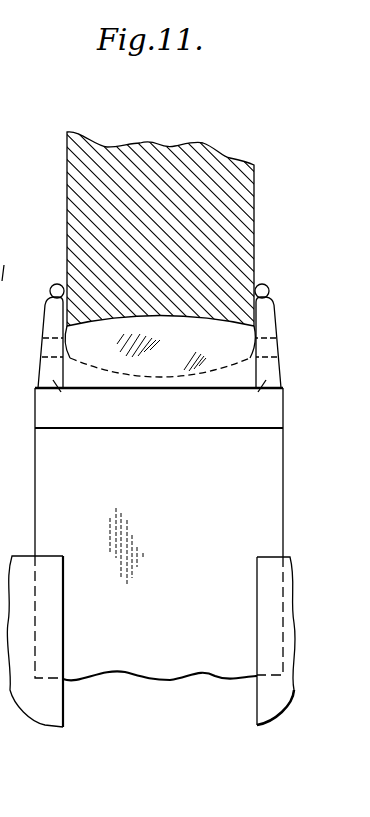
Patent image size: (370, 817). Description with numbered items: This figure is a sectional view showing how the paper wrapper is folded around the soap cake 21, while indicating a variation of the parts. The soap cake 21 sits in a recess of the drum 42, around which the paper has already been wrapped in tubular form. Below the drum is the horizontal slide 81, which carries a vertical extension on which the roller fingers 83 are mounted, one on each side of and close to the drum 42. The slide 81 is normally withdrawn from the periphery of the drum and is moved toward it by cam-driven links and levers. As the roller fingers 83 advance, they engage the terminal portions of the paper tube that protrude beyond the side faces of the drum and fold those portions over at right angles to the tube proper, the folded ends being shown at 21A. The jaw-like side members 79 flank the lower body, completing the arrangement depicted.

The drum 42 is at (160, 158).
The soap cake 21 is at (160, 351).
The folded terminal portions of paper tube 21A is at (55, 290).
The roller finger 83 is at (53, 380).
The horizontal slide 81 is at (159, 534).
The jaws 79 is at (262, 703).